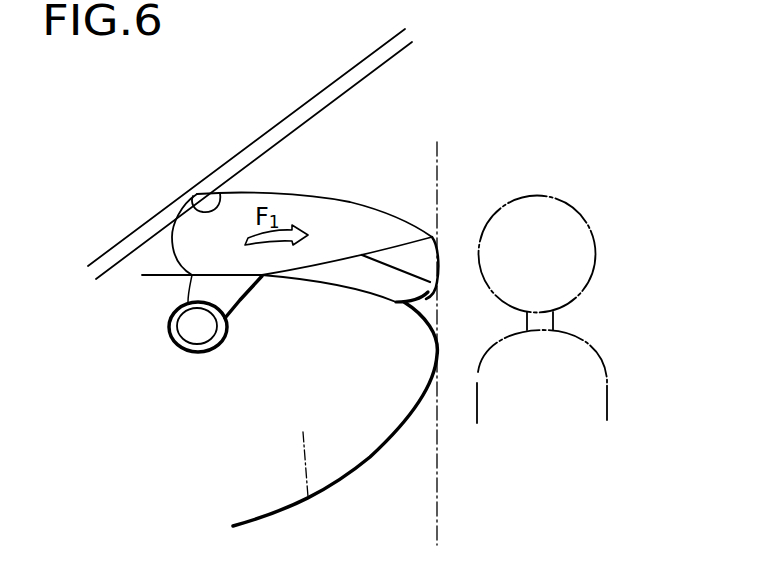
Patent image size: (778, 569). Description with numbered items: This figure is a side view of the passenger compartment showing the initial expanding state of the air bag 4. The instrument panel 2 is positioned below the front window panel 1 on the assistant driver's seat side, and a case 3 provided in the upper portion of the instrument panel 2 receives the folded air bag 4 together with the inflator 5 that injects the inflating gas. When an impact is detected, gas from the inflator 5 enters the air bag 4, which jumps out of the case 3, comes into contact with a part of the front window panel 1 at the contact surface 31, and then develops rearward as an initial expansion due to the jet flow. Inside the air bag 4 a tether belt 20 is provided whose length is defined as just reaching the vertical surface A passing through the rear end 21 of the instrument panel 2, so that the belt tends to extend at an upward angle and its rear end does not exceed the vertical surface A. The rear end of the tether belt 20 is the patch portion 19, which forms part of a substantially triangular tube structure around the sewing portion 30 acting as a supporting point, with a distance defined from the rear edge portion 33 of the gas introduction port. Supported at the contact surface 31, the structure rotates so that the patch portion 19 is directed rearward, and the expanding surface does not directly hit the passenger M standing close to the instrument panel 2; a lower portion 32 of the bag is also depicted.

The front window panel 1 is at (340, 80).
The instrument panel 2 is at (331, 486).
The case 3 is at (243, 303).
The air bag 4 is at (272, 193).
The inflator 5 is at (192, 332).
The patch portion 19 is at (438, 257).
The tether belt 20 is at (337, 258).
The rear end of the instrument panel 21 is at (437, 350).
The sewing portion 30 is at (361, 256).
The contact surface 31 is at (207, 182).
The lower portion 32 is at (372, 290).
The rear edge portion 33 is at (266, 279).
The vertical surface A is at (436, 327).
The passenger M is at (595, 255).